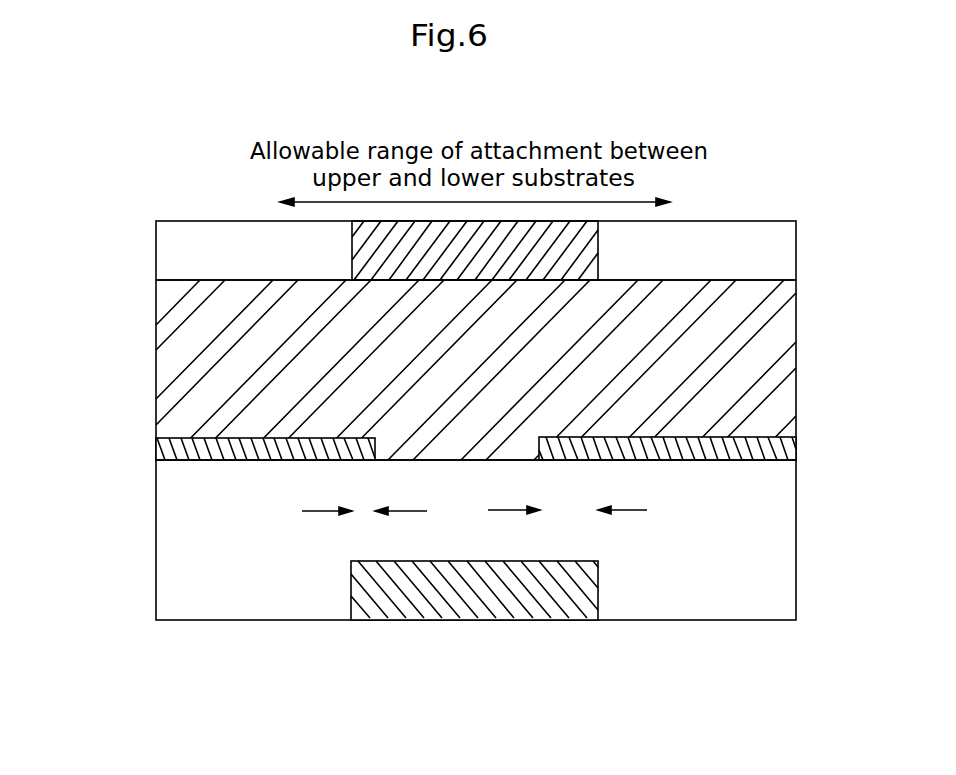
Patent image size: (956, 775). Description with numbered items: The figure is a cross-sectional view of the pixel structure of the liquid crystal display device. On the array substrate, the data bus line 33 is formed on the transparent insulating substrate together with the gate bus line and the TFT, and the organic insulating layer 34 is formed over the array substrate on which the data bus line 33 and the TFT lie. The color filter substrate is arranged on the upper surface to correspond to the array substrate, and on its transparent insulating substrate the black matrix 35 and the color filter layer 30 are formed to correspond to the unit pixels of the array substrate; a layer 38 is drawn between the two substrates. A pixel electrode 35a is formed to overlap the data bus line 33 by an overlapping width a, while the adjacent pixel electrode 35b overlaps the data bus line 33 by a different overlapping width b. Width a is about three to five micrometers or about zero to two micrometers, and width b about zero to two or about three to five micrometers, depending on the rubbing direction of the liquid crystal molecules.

The color filter layer 30 is at (509, 226).
The data bus line 33 is at (523, 600).
The organic insulating layer 34 is at (765, 540).
The black matrix 35 is at (352, 242).
The pixel electrode 35a is at (767, 448).
The adjacent pixel electrode 35b is at (166, 448).
The liquid crystal layer 38 is at (767, 362).